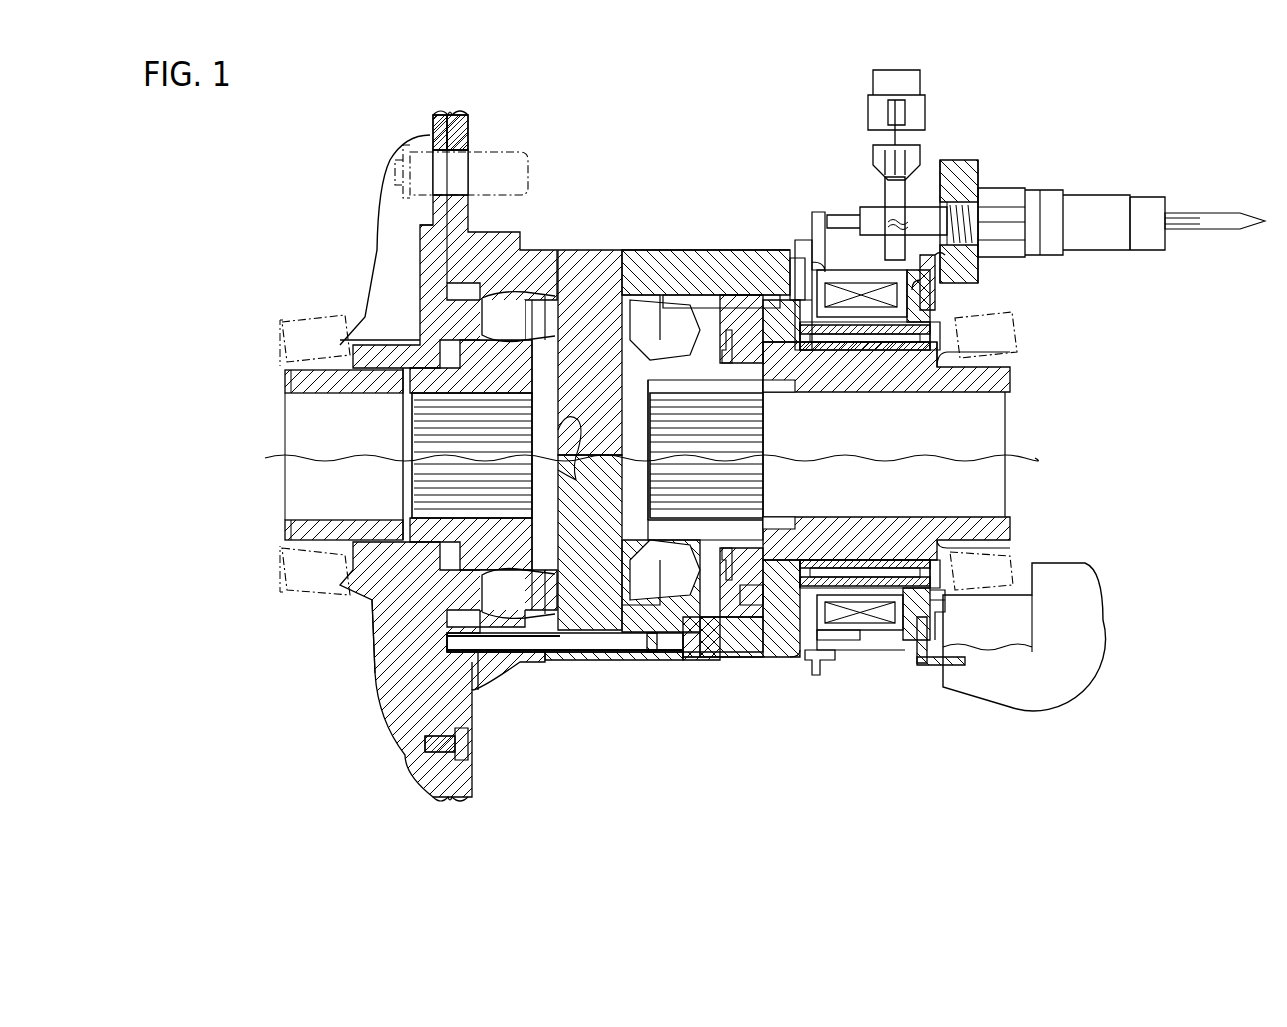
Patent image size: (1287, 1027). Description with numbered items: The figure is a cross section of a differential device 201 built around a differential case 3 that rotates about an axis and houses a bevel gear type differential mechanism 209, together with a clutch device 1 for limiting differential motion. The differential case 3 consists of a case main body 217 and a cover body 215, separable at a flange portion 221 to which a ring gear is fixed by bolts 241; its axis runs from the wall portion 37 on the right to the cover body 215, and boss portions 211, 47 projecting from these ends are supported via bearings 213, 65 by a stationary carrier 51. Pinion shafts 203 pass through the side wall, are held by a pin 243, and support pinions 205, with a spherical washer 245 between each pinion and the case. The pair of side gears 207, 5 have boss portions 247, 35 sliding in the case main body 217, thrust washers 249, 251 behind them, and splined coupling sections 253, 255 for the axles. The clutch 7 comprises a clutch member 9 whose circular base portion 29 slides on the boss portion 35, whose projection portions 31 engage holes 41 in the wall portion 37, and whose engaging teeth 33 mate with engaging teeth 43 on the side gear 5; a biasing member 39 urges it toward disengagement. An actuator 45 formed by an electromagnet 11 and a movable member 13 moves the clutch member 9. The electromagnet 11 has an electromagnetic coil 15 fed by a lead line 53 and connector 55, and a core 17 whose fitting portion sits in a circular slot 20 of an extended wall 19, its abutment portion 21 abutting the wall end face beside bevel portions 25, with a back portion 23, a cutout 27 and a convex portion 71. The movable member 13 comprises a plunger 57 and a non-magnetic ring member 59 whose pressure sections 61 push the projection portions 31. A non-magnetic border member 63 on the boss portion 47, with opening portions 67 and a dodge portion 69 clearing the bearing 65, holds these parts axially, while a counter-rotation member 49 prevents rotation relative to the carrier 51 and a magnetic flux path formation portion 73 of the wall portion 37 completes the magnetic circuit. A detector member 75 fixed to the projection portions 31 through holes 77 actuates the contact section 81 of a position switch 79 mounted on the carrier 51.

The clutch device 1 is at (817, 127).
The differential case 3 is at (645, 248).
The side gear 5 is at (695, 580).
The clutch 7 is at (712, 295).
The clutch member 9 is at (755, 580).
The electromagnet 11 is at (922, 650).
The movable member 13 is at (885, 560).
The electromagnetic coil 15 is at (890, 280).
The core 17 is at (965, 288).
The extended wall 19 is at (840, 650).
The circular slot 20 is at (810, 660).
The abutment portion 21 is at (870, 640).
The back portion 23 is at (895, 622).
The bevel portion 25 is at (845, 283).
The cutout 27 is at (850, 560).
The base portion 29 is at (750, 580).
The projection portions 31 is at (810, 375).
The engaging teeth 33 is at (742, 620).
The boss portion 35 is at (700, 385).
The wall portion 37 is at (790, 610).
The biasing member 39 is at (712, 540).
The holes 41 is at (745, 295).
The engaging teeth 43 is at (720, 600).
The actuator 45 is at (880, 742).
The boss portion 47 is at (1000, 528).
The counter-rotation member 49 is at (940, 668).
The carrier 51 is at (975, 175).
The lead line 53 is at (907, 157).
The connector 55 is at (907, 104).
The plunger 57 is at (880, 350).
The ring member 59 is at (905, 350).
The pressure sections 61 is at (838, 375).
The border member 63 is at (940, 350).
The bearing 65 is at (1010, 335).
The opening portions 67 is at (935, 560).
The dodge portion 69 is at (1010, 367).
The convex portion 71 is at (935, 305).
The magnetic flux path formation portion 73 is at (812, 560).
The detector member 75 is at (797, 265).
The holes 77 is at (790, 290).
The position switch 79 is at (1013, 182).
The contact section 81 is at (820, 210).
The differential device 201 is at (607, 115).
The pinion shafts 203 is at (598, 248).
The pinion 205 is at (534, 300).
The side gear 207 is at (489, 662).
The differential mechanism 209 is at (594, 742).
The boss portion 211 is at (288, 386).
The bearing 213 is at (278, 352).
The cover body 215 is at (440, 115).
The case main body 217 is at (462, 115).
The flange portion 221 is at (438, 798).
The bolts 241 is at (406, 170).
The pin 243 is at (530, 645).
The spherical washer 245 is at (652, 653).
The boss portion 247 is at (413, 338).
The thrust washer 249 is at (372, 620).
The thrust washer 251 is at (742, 385).
The coupling section 253 is at (408, 437).
The coupling section 255 is at (642, 420).